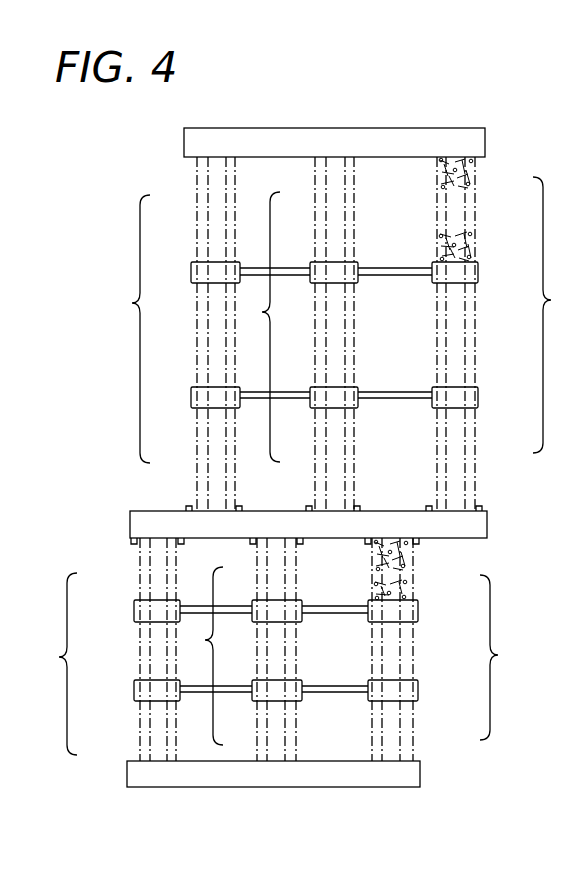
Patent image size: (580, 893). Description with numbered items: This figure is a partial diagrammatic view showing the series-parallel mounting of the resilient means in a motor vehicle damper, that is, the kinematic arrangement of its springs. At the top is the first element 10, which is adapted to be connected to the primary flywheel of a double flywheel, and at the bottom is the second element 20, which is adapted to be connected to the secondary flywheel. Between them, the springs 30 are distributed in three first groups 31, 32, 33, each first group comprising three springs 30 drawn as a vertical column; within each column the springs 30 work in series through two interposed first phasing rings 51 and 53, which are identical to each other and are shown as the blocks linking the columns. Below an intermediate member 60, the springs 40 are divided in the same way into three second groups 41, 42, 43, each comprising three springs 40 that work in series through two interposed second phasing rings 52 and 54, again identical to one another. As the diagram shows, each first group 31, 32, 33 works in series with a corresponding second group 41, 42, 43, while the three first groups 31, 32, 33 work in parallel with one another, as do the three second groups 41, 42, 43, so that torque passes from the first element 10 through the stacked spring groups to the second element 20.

The first element 10 is at (183, 137).
The second element 20 is at (125, 780).
The springs 30 is at (196, 203).
The first group of springs 31 is at (290, 409).
The first group of springs 32 is at (262, 327).
The first group of springs 33 is at (127, 329).
The springs 40 is at (138, 580).
The second group of springs 41 is at (507, 657).
The second group of springs 42 is at (202, 656).
The second group of springs 43 is at (52, 664).
The first phasing ring 51 is at (431, 280).
The second phasing ring 52 is at (366, 616).
The first phasing ring 53 is at (431, 410).
The second phasing ring 54 is at (366, 700).
The intermediate plate 60 is at (134, 510).